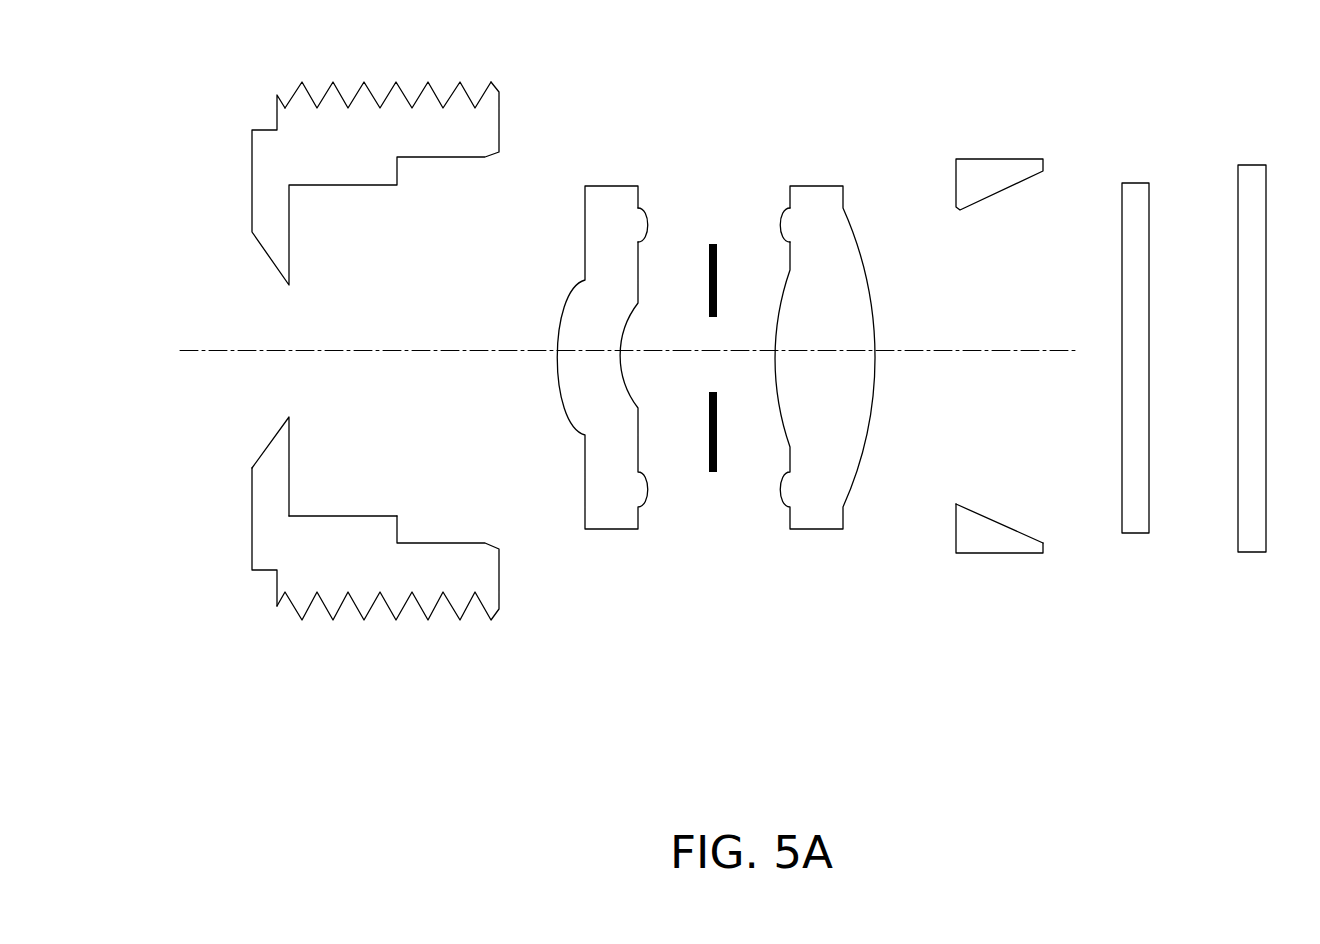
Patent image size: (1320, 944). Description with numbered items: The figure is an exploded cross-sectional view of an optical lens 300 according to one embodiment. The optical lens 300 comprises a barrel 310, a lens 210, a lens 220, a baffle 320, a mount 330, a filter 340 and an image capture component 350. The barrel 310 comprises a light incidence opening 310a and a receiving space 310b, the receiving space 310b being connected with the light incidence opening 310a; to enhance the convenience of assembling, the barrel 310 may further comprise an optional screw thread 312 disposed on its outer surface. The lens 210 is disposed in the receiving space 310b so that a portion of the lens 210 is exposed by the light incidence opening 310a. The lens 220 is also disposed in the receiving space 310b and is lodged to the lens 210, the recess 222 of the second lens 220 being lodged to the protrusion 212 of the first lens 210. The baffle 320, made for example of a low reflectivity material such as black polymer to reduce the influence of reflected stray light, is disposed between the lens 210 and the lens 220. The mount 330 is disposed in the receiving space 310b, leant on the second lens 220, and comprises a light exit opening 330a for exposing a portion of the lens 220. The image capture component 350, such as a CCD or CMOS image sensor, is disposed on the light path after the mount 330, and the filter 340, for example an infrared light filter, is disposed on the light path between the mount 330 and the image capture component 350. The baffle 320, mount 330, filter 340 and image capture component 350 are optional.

The optical lens 300 is at (1223, 790).
The barrel 310 is at (328, 364).
The light incidence opening 310a is at (272, 442).
The receiving space 310b is at (305, 505).
The screw thread 312 is at (344, 94).
The lens 210 is at (628, 381).
The protrusion 212 is at (648, 212).
The lens 220 is at (806, 388).
The recess 222 is at (795, 223).
The baffle 320 is at (713, 475).
The mount 330 is at (1038, 446).
The light exit opening 330a is at (1001, 512).
The filter 340 is at (1138, 513).
The image capture component 350 is at (1255, 513).